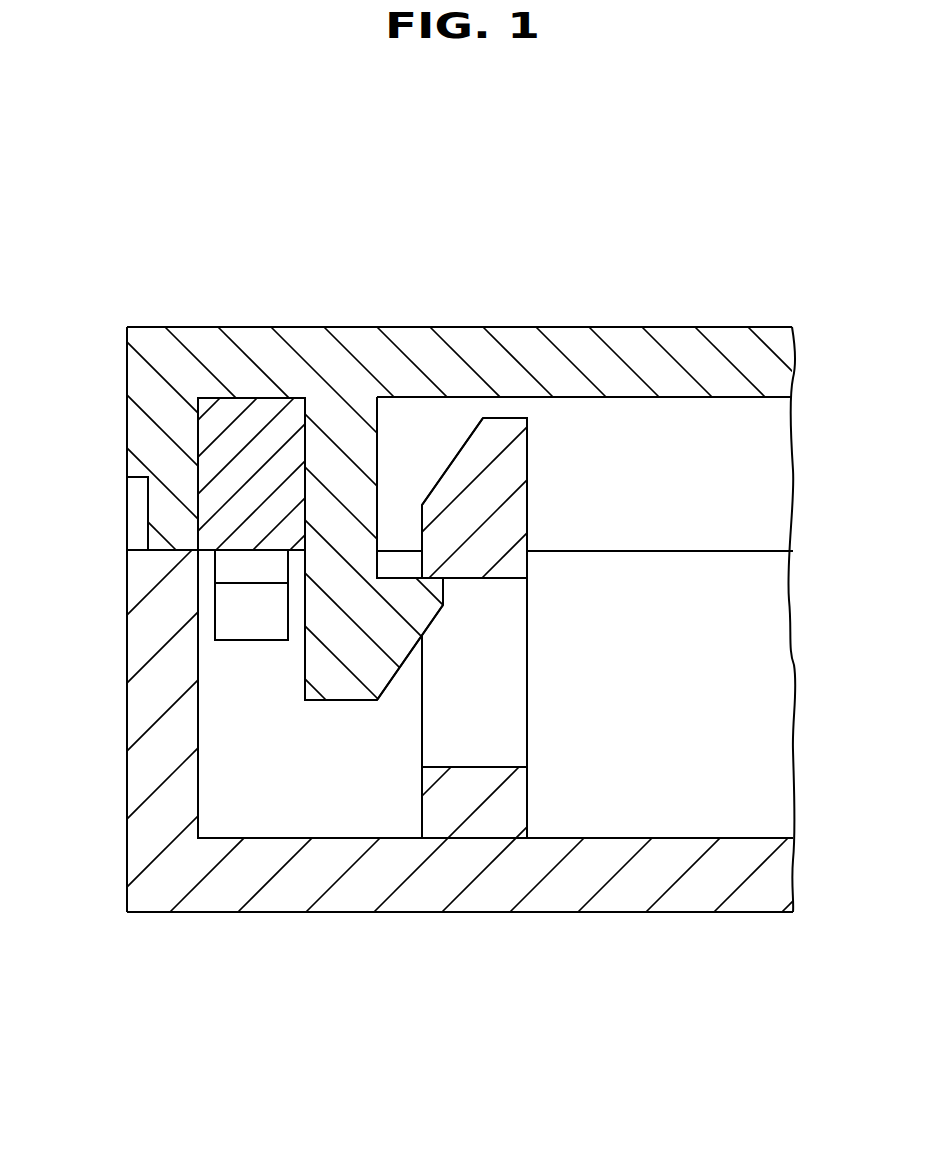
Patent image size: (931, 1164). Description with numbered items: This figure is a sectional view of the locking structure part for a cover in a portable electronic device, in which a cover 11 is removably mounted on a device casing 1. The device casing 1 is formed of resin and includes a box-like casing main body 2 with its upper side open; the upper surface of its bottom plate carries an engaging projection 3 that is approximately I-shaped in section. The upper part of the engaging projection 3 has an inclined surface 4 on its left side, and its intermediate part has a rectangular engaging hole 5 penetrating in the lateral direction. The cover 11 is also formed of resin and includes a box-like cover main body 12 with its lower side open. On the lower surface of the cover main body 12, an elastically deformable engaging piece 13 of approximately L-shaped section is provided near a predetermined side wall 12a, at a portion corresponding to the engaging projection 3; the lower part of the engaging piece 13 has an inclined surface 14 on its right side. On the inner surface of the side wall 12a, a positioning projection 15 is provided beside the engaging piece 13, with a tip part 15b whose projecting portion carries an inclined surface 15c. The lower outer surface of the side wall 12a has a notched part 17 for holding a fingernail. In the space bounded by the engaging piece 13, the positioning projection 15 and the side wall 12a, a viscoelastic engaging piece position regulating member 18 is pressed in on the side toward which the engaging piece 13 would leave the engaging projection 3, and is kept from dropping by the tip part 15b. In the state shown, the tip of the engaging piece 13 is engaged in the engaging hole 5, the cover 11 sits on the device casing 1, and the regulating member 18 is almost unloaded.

The device casing 1 is at (710, 912).
The casing main body 2 is at (288, 912).
The engaging projection 3 is at (527, 468).
The inclined surface 4 is at (450, 462).
The engaging hole 5 is at (517, 723).
The cover 11 is at (715, 327).
The cover main body 12 is at (520, 342).
The predetermined side wall 12a is at (135, 440).
The engaging piece 13 is at (334, 700).
The inclined surface 14 is at (433, 618).
The positioning projection 15 is at (243, 628).
The tip part 15b is at (215, 567).
The inclined surface 15c is at (217, 610).
The notched part 17 is at (130, 505).
The engaging piece position regulating member 18 is at (250, 408).